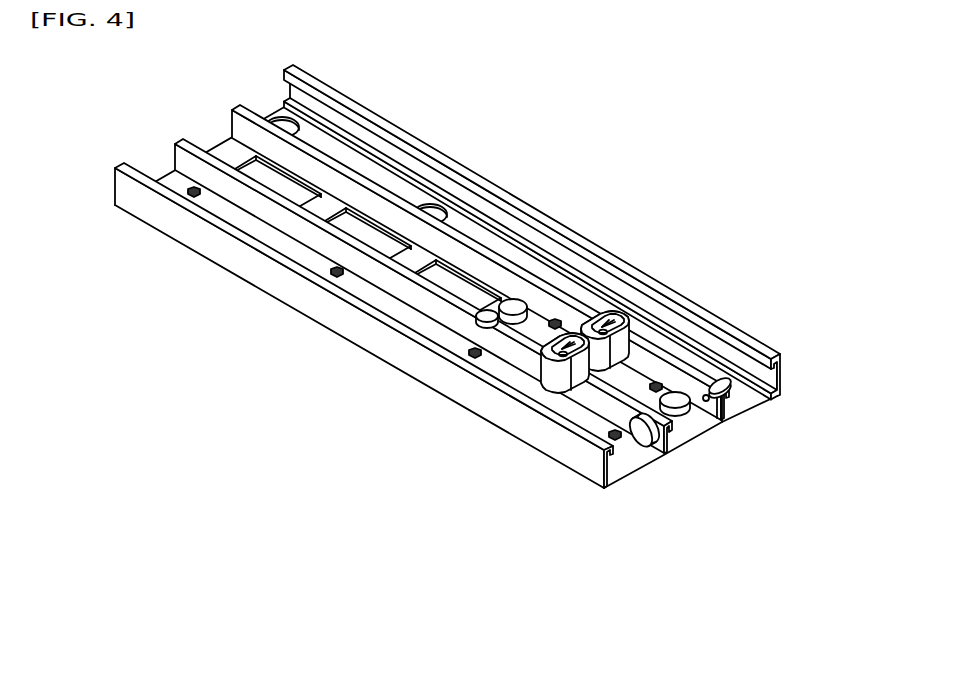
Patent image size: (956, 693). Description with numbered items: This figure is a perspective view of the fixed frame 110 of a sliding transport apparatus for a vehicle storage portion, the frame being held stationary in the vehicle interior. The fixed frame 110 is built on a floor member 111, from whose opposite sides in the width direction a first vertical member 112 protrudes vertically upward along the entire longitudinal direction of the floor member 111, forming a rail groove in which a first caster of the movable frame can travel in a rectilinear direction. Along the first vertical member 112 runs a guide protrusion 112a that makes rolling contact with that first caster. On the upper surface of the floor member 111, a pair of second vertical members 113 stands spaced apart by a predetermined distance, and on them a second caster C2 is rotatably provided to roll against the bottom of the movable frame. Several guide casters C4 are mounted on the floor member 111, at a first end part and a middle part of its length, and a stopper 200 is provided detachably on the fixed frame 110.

The fixed frame 110 is at (493, 332).
The floor member 111 is at (623, 466).
The first vertical member 112 is at (364, 351).
The guide protrusion 112a is at (781, 361).
The second vertical member 113 is at (583, 398).
The stopper 200 is at (608, 318).
The second caster C2 is at (655, 452).
The guide caster C4 is at (513, 300).